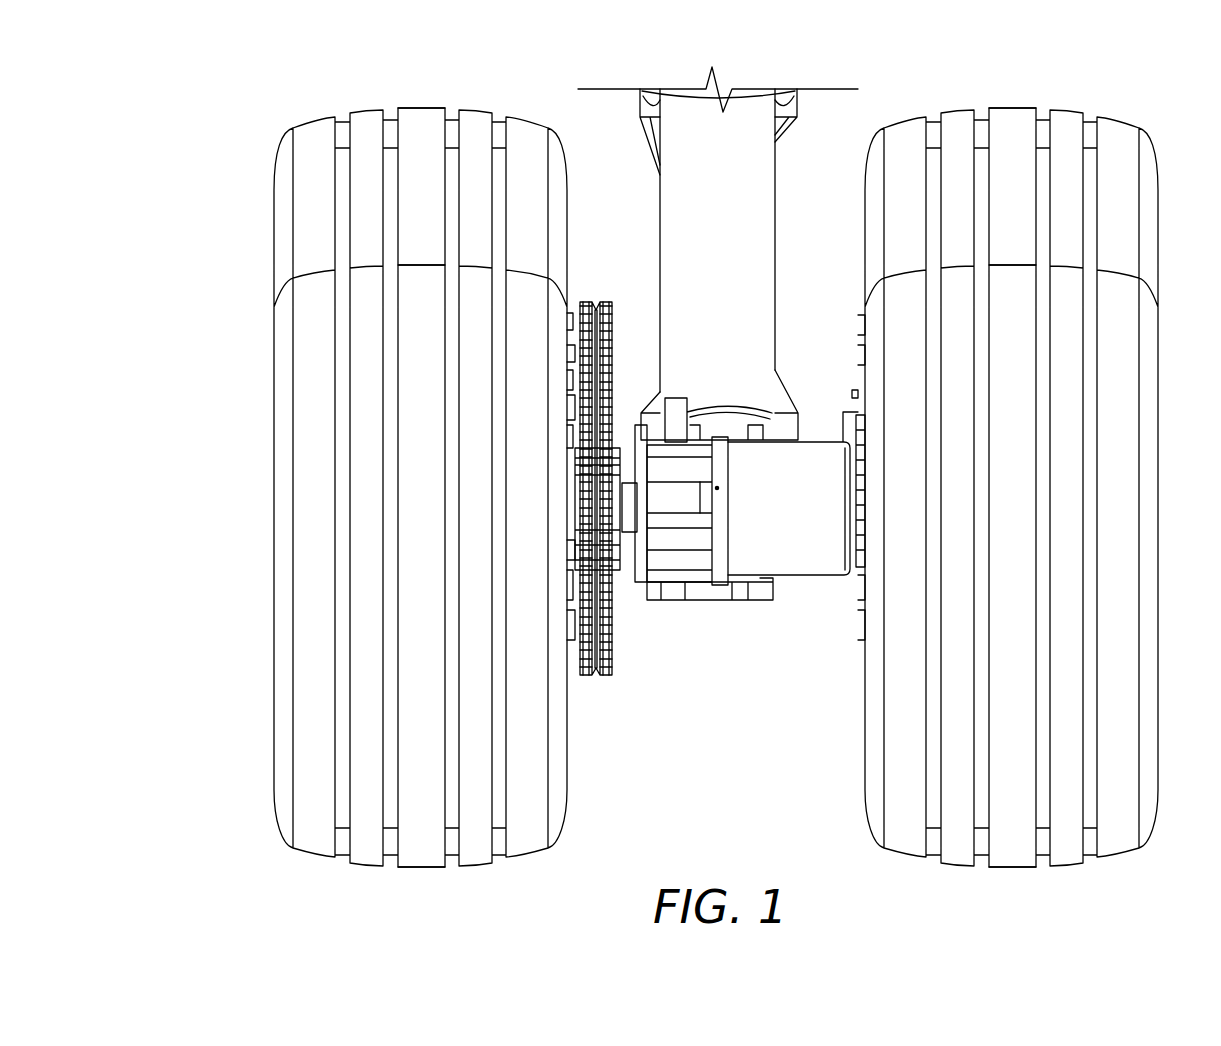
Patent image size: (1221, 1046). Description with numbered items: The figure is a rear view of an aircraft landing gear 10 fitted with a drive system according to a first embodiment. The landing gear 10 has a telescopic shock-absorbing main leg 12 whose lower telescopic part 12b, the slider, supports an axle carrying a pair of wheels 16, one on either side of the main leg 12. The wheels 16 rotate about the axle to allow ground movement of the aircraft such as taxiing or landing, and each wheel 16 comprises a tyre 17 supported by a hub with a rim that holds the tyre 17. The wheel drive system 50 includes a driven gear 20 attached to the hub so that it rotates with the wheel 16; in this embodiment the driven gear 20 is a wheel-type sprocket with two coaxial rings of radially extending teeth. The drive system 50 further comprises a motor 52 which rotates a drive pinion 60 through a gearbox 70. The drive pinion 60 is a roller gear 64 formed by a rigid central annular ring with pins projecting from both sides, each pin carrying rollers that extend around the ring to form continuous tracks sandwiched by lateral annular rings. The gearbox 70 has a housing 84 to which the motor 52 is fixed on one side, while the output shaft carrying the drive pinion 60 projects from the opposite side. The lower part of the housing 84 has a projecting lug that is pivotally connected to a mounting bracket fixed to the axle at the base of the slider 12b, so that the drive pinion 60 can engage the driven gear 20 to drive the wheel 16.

The landing gear 10 is at (972, 60).
The main leg 12 is at (614, 82).
The lower telescopic part 12b is at (775, 172).
The wheel 16 is at (420, 860).
The tyre 17 is at (307, 690).
The driven gear 20 is at (596, 688).
The wheel drive system 50 is at (744, 624).
The motor 52 is at (820, 565).
The drive pinion 60 is at (621, 584).
The roller gear 64 is at (585, 517).
The gearbox 70 is at (672, 565).
The housing 84 is at (700, 493).